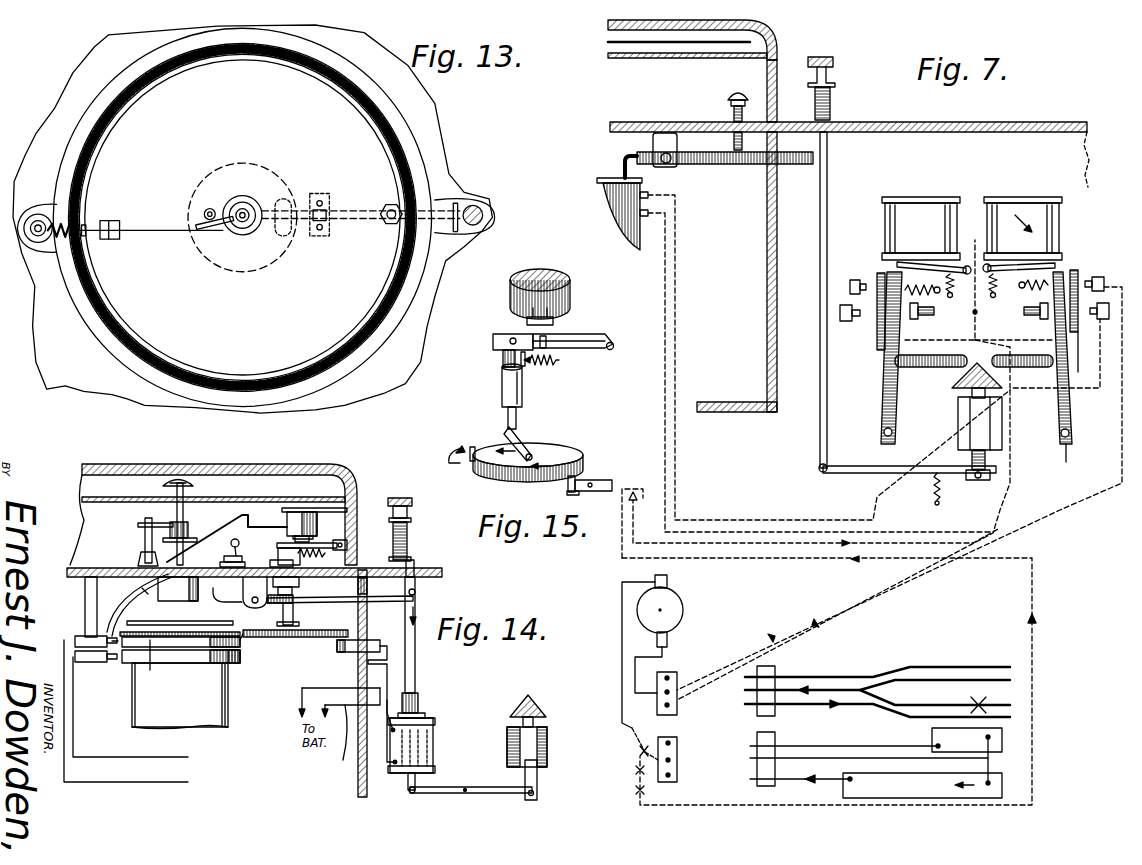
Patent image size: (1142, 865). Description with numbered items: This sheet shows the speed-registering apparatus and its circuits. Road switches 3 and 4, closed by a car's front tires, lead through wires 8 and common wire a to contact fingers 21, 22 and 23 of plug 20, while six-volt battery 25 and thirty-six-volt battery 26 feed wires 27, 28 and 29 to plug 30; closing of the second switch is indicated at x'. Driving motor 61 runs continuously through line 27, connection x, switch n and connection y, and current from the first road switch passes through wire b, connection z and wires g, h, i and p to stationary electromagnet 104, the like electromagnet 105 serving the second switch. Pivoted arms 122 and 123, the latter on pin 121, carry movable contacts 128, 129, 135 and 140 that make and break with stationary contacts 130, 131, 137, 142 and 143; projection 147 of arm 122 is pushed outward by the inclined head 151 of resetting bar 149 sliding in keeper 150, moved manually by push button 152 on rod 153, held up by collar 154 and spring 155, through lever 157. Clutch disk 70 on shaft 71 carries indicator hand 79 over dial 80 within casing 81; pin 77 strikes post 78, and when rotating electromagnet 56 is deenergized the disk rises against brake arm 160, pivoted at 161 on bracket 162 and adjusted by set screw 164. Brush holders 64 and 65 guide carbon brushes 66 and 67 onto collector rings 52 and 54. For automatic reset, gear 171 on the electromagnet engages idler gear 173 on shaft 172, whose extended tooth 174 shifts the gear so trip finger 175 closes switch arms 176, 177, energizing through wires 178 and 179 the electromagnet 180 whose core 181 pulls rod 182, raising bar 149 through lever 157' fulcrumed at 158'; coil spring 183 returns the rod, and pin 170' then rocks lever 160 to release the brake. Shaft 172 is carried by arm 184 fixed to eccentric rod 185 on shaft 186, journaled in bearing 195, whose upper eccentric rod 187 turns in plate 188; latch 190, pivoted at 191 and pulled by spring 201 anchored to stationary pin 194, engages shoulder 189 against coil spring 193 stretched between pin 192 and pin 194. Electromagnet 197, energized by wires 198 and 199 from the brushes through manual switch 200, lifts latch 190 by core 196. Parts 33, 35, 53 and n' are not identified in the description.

In FIG. 7, the first road switch 3 is at (1017, 674).
In FIG. 7, the second road switch 4 is at (1017, 709).
In FIG. 7, the wire 8 is at (835, 674).
In FIG. 7, the plug 20 is at (777, 667).
In FIG. 7, the contact finger 21 is at (670, 676).
In FIG. 7, the contact finger 22 is at (669, 692).
In FIG. 7, the contact finger 23 is at (669, 705).
In FIG. 7, the six volt battery 25 is at (1003, 741).
In FIG. 7, the thirty-six volt battery 26 is at (1003, 786).
In FIG. 7, the wire 27 is at (882, 746).
In FIG. 7, the common wire 28 is at (840, 758).
In FIG. 7, the wire 29 is at (825, 780).
In FIG. 7, the plug 30 is at (777, 735).
In FIG. 14, the post 33 is at (358, 795).
In FIG. 7, the post 33 is at (767, 272).
In FIG. 7, the foot 35 is at (711, 402).
In FIG. 14, the collector ring 52 is at (240, 652).
In FIG. 14, the casing 53 is at (213, 665).
In FIG. 14, the collector ring 54 is at (185, 690).
In FIG. 14, the rotating electromagnet 56 is at (198, 720).
In FIG. 7, the driving motor 61 is at (668, 603).
In FIG. 14, the brush holder 64 is at (80, 636).
In FIG. 14, the brush holder 65 is at (94, 657).
In FIG. 14, the carbon brush 66 is at (104, 658).
In FIG. 14, the carbon brush 67 is at (118, 660).
In FIG. 13, the clutch disk 70 is at (252, 160).
In FIG. 14, the clutch disk 70 is at (215, 608).
In FIG. 7, the clutch disk 70 is at (603, 190).
In FIG. 13, the shaft 71 is at (223, 190).
In FIG. 14, the shaft 71 is at (165, 515).
In FIG. 13, the brass pin 77 is at (179, 212).
In FIG. 14, the brass pin 77 is at (138, 528).
In FIG. 13, the post 78 is at (188, 195).
In FIG. 7, the indicator hand 79 is at (608, 37).
In FIG. 7, the dial 80 is at (655, 58).
In FIG. 7, the casing 81 is at (778, 60).
In FIG. 7, the stationary electromagnetic coil 104 is at (918, 196).
In FIG. 7, the stationary electromagnetic coil 105 is at (1030, 196).
In FIG. 7, the pivot pin 121 is at (1066, 444).
In FIG. 7, the pivoted arm 122 is at (884, 392).
In FIG. 7, the pivoted arm 123 is at (1060, 428).
In FIG. 7, the movable contact 128 is at (876, 278).
In FIG. 7, the movable contact 129 is at (1080, 278).
In FIG. 7, the stationary contact 130 is at (877, 330).
In FIG. 7, the stationary contact 131 is at (1080, 285).
In FIG. 7, the movable contact member 135 is at (1025, 367).
In FIG. 7, the stationary contact member 137 is at (1078, 372).
In FIG. 7, the movable contact member 140 is at (912, 325).
In FIG. 7, the stationary contact 142 is at (938, 314).
In FIG. 7, the stationary contact 143 is at (1019, 314).
In FIG. 7, the projection 147 is at (938, 367).
In FIG. 14, the resetting bar 149 is at (525, 797).
In FIG. 7, the keeper 150 is at (958, 415).
In FIG. 14, the head 151 is at (522, 712).
In FIG. 7, the push button 152 is at (835, 60).
In FIG. 7, the rod 153 is at (820, 441).
In FIG. 7, the collar 154 is at (833, 80).
In FIG. 7, the spring 155 is at (832, 100).
In FIG. 7, the lever 157 is at (909, 487).
In FIG. 14, the lever 157' is at (470, 777).
In FIG. 14, the fulcrum 158' is at (435, 805).
In FIG. 14, the brake arm 160 is at (298, 615).
In FIG. 7, the brake arm 160 is at (625, 156).
In FIG. 7, the pivot 161 is at (675, 166).
In FIG. 13, the bracket 162 is at (302, 217).
In FIG. 7, the bracket 162 is at (680, 152).
In FIG. 13, the set screw 164 is at (357, 189).
In FIG. 7, the set screw 164 is at (733, 97).
In FIG. 14, the pin 170' is at (432, 626).
In FIG. 15, the gear 171 is at (447, 455).
In FIG. 14, the gear 171 is at (148, 647).
In FIG. 15, the stub shaft 172 is at (541, 451).
In FIG. 14, the stub shaft 172 is at (262, 608).
In FIG. 15, the idler gear 173 is at (562, 455).
In FIG. 14, the idler gear 173 is at (250, 652).
In FIG. 15, the extended tooth 174 is at (472, 446).
In FIG. 15, the trip finger 175 is at (567, 492).
In FIG. 14, the trip finger 175 is at (337, 647).
In FIG. 15, the switch arm 176 is at (621, 467).
In FIG. 15, the switch arm 177 is at (601, 481).
In FIG. 14, the switch arm 177 is at (405, 603).
In FIG. 14, the wire 178 is at (332, 688).
In FIG. 14, the wire 179 is at (345, 762).
In FIG. 14, the electromagnet 180 is at (433, 728).
In FIG. 14, the solenoid core 181 is at (418, 713).
In FIG. 14, the rod 182 is at (416, 690).
In FIG. 14, the coil spring 183 is at (408, 540).
In FIG. 15, the arm 184 is at (529, 453).
In FIG. 15, the projecting rod 185 is at (508, 421).
In FIG. 15, the shaft 186 is at (502, 381).
In FIG. 14, the shaft 186 is at (285, 548).
In FIG. 15, the rod 187 is at (503, 353).
In FIG. 15, the plate 188 is at (496, 338).
In FIG. 15, the shoulder 189 is at (512, 336).
In FIG. 15, the latch 190 is at (585, 333).
In FIG. 14, the latch 190 is at (340, 546).
In FIG. 15, the pivot 191 is at (631, 338).
In FIG. 15, the pin 192 is at (526, 362).
In FIG. 15, the coil spring 193 is at (552, 332).
In FIG. 15, the stationary pin 194 is at (561, 361).
In FIG. 14, the stationary pin 194 is at (379, 589).
In FIG. 14, the stationary bearing 195 is at (304, 589).
In FIG. 15, the core 196 is at (549, 323).
In FIG. 14, the core 196 is at (320, 518).
In FIG. 15, the electromagnet 197 is at (537, 268).
In FIG. 14, the electromagnet 197 is at (300, 536).
In FIG. 14, the wire 198 is at (190, 482).
In FIG. 14, the wire 199 is at (173, 605).
In FIG. 14, the manual switch 200 is at (233, 540).
In FIG. 14, the pull spring 201 is at (347, 548).
In FIG. 7, the common wire a is at (853, 687).
In FIG. 7, the wire b is at (630, 732).
In FIG. 7, the wire g is at (1035, 665).
In FIG. 7, the wire h is at (622, 540).
In FIG. 7, the wire i is at (811, 523).
In FIG. 7, the switch n is at (624, 769).
In FIG. 7, the contact n' is at (623, 792).
In FIG. 7, the wire p is at (1011, 408).
In FIG. 7, the connection x is at (687, 757).
In FIG. 7, the second road switch closure point x' is at (985, 700).
In FIG. 7, the connection y is at (680, 760).
In FIG. 7, the connection z is at (680, 776).